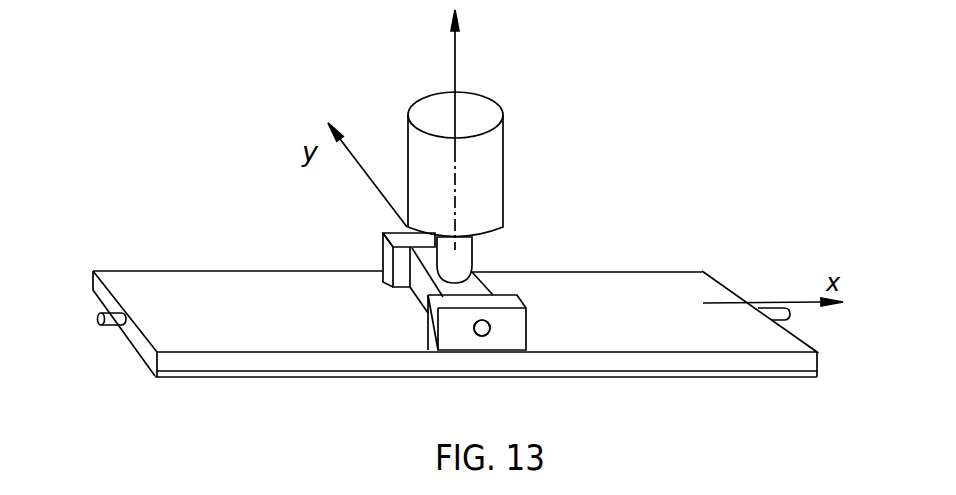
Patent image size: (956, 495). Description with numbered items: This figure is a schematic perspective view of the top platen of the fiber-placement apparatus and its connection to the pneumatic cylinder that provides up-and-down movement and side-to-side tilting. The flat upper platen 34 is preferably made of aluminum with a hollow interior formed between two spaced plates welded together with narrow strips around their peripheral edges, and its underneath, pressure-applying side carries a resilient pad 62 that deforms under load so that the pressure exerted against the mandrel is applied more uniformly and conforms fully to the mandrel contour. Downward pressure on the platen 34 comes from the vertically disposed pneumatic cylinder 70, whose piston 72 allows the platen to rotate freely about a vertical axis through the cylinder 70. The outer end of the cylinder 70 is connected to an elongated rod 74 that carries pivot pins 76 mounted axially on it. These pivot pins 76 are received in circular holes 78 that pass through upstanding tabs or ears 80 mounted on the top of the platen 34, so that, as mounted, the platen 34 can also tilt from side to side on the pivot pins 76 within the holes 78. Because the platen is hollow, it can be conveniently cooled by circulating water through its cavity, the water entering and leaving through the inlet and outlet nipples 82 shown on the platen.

The upper platen 34 is at (662, 250).
The resilient pad 62 is at (720, 375).
The pneumatic cylinder 70 is at (497, 167).
The piston 72 is at (465, 257).
The elongated rod 74 is at (416, 293).
The pivot pins 76 is at (482, 328).
The circular holes 78 is at (477, 337).
The upstanding tabs or ears 80 is at (382, 253).
The inlet and outlet nipples 82 is at (113, 326).